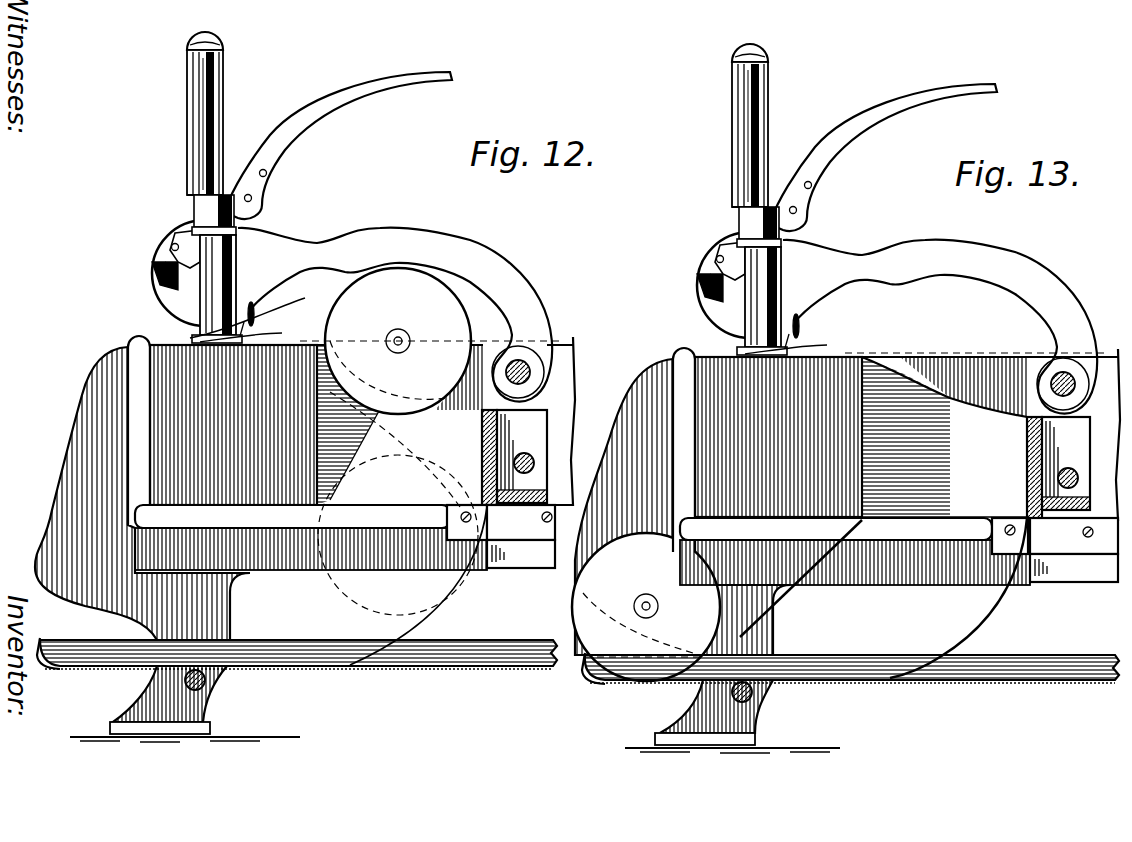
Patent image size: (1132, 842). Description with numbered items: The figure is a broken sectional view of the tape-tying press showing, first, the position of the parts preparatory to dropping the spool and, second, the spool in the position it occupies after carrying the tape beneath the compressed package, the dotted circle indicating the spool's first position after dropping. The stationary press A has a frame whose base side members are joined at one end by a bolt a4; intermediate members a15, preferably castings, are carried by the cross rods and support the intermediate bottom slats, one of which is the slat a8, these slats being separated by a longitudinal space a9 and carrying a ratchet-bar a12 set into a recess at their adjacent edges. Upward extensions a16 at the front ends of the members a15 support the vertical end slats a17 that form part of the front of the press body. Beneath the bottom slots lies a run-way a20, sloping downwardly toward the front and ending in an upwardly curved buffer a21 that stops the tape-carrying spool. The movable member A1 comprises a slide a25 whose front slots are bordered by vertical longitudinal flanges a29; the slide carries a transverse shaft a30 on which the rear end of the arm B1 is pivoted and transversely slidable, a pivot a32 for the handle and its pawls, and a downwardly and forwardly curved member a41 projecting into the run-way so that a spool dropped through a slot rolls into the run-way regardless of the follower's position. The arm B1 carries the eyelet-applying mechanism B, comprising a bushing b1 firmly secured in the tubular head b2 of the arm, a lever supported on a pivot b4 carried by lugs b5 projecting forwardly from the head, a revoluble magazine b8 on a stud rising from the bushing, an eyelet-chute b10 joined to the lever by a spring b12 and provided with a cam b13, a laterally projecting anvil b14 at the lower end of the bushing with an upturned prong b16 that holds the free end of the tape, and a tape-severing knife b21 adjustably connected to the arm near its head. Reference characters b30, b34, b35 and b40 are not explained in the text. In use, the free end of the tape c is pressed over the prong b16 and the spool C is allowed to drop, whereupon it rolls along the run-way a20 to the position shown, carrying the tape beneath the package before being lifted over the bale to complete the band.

In FIG. 12, the press A is at (167, 544).
In FIG. 12, the movable member A1 is at (384, 447).
In FIG. 13, the movable member A1 is at (960, 459).
In FIG. 12, the bolt a4 is at (207, 684).
In FIG. 13, the bolt a4 is at (754, 697).
In FIG. 12, the intermediate slat a8 is at (399, 488).
In FIG. 13, the intermediate slat a8 is at (944, 502).
In FIG. 12, the longitudinal space a9 is at (292, 516).
In FIG. 13, the longitudinal space a9 is at (836, 532).
In FIG. 12, the ratchet-bar a12 is at (531, 533).
In FIG. 13, the ratchet-bar a12 is at (1086, 548).
In FIG. 12, the intermediate member a15 is at (311, 560).
In FIG. 13, the intermediate member a15 is at (855, 576).
In FIG. 12, the upward extension a16 is at (126, 349).
In FIG. 13, the upward extension a16 is at (671, 362).
In FIG. 12, the vertical end slat a17 is at (137, 401).
In FIG. 13, the vertical end slat a17 is at (682, 419).
In FIG. 12, the run-way a20 is at (472, 651).
In FIG. 13, the run-way a20 is at (1057, 666).
In FIG. 12, the buffer a21 is at (44, 642).
In FIG. 13, the buffer a21 is at (575, 672).
In FIG. 12, the slide a25 is at (501, 522).
In FIG. 13, the slide a25 is at (1055, 536).
In FIG. 12, the vertical longitudinal flange a29 is at (464, 457).
In FIG. 13, the vertical longitudinal flange a29 is at (1010, 468).
In FIG. 12, the transverse shaft a30 is at (546, 375).
In FIG. 13, the transverse shaft a30 is at (1046, 384).
In FIG. 12, the pivot a32 is at (535, 464).
In FIG. 13, the pivot a32 is at (1068, 470).
In FIG. 12, the curved member a41 is at (458, 595).
In FIG. 13, the curved member a41 is at (1002, 612).
In FIG. 12, the eyelet-applying mechanism B is at (163, 264).
In FIG. 13, the eyelet-applying mechanism B is at (708, 276).
In FIG. 12, the arm B1 is at (440, 264).
In FIG. 13, the arm B1 is at (940, 327).
In FIG. 12, the bushing b1 is at (252, 223).
In FIG. 13, the bushing b1 is at (884, 161).
In FIG. 12, the tubular head b2 is at (218, 285).
In FIG. 13, the tubular head b2 is at (763, 297).
In FIG. 12, the pivot b4 is at (182, 238).
In FIG. 13, the pivot b4 is at (723, 247).
In FIG. 12, the lug b5 is at (214, 253).
In FIG. 13, the lug b5 is at (759, 265).
In FIG. 12, the revoluble magazine b8 is at (190, 122).
In FIG. 13, the revoluble magazine b8 is at (735, 134).
In FIG. 12, the eyelet-chute b10 is at (172, 247).
In FIG. 13, the eyelet-chute b10 is at (699, 256).
In FIG. 12, the spring b12 is at (163, 273).
In FIG. 13, the spring b12 is at (690, 281).
In FIG. 12, the cam b13 is at (158, 284).
In FIG. 13, the cam b13 is at (695, 295).
In FIG. 12, the anvil b14 is at (254, 333).
In FIG. 13, the anvil b14 is at (802, 345).
In FIG. 12, the prong b16 is at (190, 338).
In FIG. 13, the prong b16 is at (734, 336).
In FIG. 12, the tape-severing knife b21 is at (253, 316).
In FIG. 13, the tape-severing knife b21 is at (811, 318).
In FIG. 12, the shoulder of rod b30 is at (190, 198).
In FIG. 13, the shoulder of rod b30 is at (732, 193).
In FIG. 12, the knob b34 is at (219, 38).
In FIG. 13, the knob b34 is at (769, 45).
In FIG. 12, the rod groove b35 is at (220, 80).
In FIG. 13, the rod groove b35 is at (779, 135).
In FIG. 12, the link b40 is at (248, 335).
In FIG. 13, the link b40 is at (815, 331).
In FIG. 12, the spool C is at (398, 441).
In FIG. 13, the spool C is at (646, 607).
In FIG. 12, the tape c is at (253, 312).
In FIG. 13, the tape c is at (782, 588).